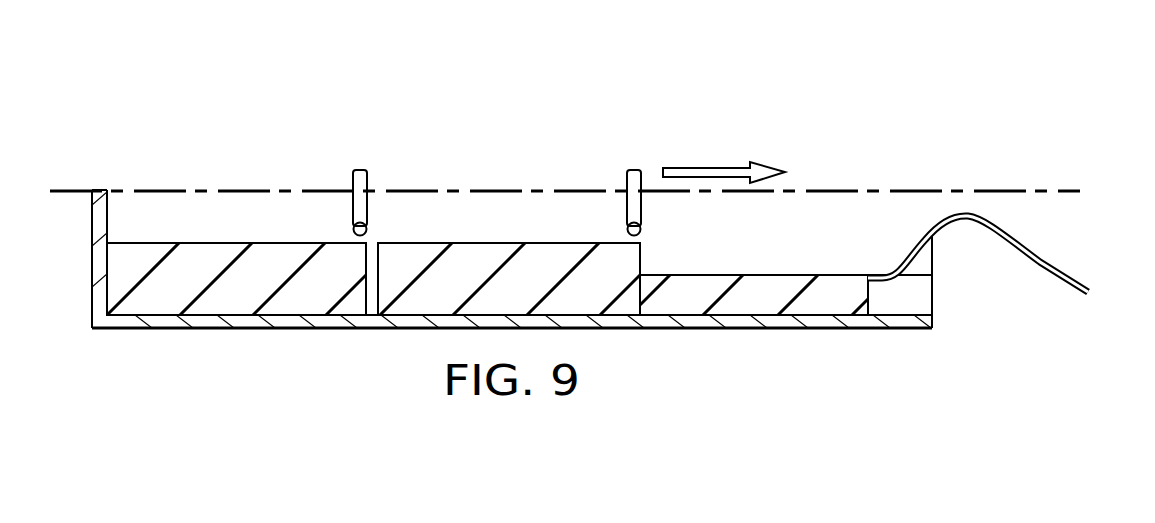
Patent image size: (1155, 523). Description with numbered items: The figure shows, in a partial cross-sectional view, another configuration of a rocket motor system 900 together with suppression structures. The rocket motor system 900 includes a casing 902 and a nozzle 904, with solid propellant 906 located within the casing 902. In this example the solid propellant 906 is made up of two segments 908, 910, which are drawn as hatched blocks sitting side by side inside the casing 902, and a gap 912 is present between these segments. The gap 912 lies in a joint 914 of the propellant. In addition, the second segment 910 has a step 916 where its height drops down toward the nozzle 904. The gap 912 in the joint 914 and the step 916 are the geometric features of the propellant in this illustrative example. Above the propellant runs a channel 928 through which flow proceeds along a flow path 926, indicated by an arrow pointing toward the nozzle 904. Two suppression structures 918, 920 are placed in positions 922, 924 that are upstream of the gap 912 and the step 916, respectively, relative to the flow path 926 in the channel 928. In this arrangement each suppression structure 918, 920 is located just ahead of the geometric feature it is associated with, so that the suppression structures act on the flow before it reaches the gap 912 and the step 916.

The rocket motor system 900 is at (644, 98).
The casing 902 is at (290, 332).
The nozzle 904 is at (1067, 267).
The solid propellant 906 is at (738, 300).
The segment 908 is at (198, 241).
The segment 910 is at (470, 242).
The gap 912 is at (373, 250).
The joint 914 is at (372, 336).
The step 916 is at (645, 258).
The suppression structure 918 is at (353, 178).
The suppression structure 920 is at (627, 178).
The position 922 is at (336, 229).
The position 924 is at (608, 229).
The flow path 926 is at (707, 165).
The channel 928 is at (799, 247).